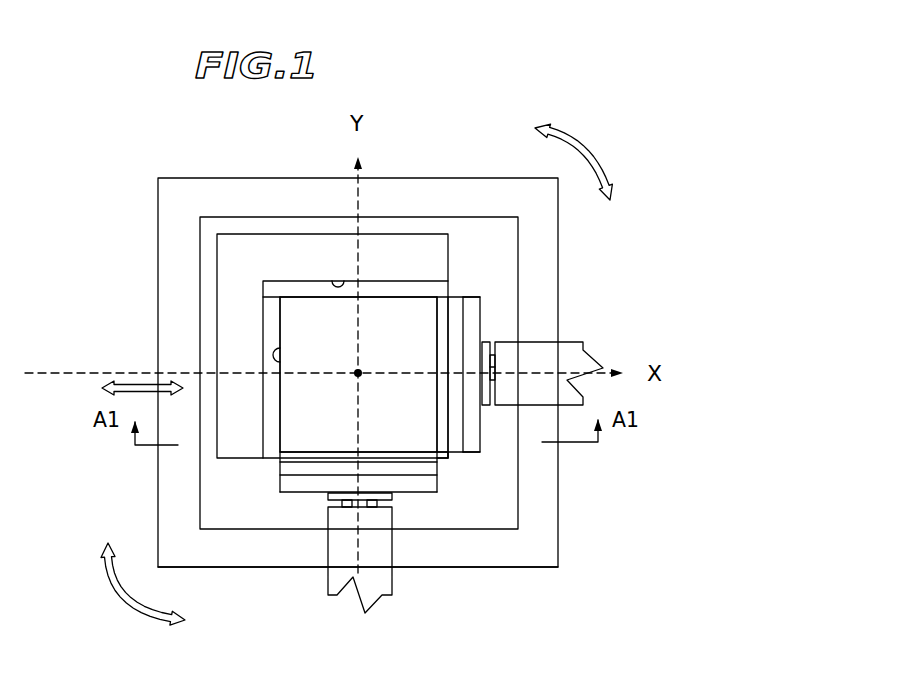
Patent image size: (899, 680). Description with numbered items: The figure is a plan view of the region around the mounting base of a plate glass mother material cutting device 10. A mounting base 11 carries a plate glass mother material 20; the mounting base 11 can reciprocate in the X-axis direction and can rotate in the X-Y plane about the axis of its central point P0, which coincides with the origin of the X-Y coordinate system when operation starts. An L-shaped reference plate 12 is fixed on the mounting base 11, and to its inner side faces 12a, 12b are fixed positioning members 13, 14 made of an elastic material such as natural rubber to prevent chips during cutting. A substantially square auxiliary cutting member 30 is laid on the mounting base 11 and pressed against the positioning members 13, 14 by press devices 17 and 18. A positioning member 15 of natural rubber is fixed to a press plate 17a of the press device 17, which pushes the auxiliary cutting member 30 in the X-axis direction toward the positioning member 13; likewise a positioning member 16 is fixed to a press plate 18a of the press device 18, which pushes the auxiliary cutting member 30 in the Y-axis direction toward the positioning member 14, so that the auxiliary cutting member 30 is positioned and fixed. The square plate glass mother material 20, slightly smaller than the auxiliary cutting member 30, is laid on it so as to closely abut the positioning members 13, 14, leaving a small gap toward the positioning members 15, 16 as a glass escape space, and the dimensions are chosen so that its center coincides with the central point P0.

The plate glass mother material cutting device 10 is at (414, 100).
The mounting base 11 is at (502, 578).
The reference plate 12 is at (223, 263).
The inner side face 12a is at (270, 357).
The inner side face 12b is at (343, 279).
The positioning member 13 is at (270, 322).
The positioning member 14 is at (308, 285).
The positioning member 15 is at (455, 310).
The positioning member 16 is at (283, 468).
The press device 17 is at (565, 347).
The press plate 17a is at (473, 318).
The press device 18 is at (335, 554).
The press plate 18a is at (420, 487).
The plate glass mother material 20 is at (402, 303).
The auxiliary cutting member 30 is at (447, 460).
The central point P0 is at (362, 377).